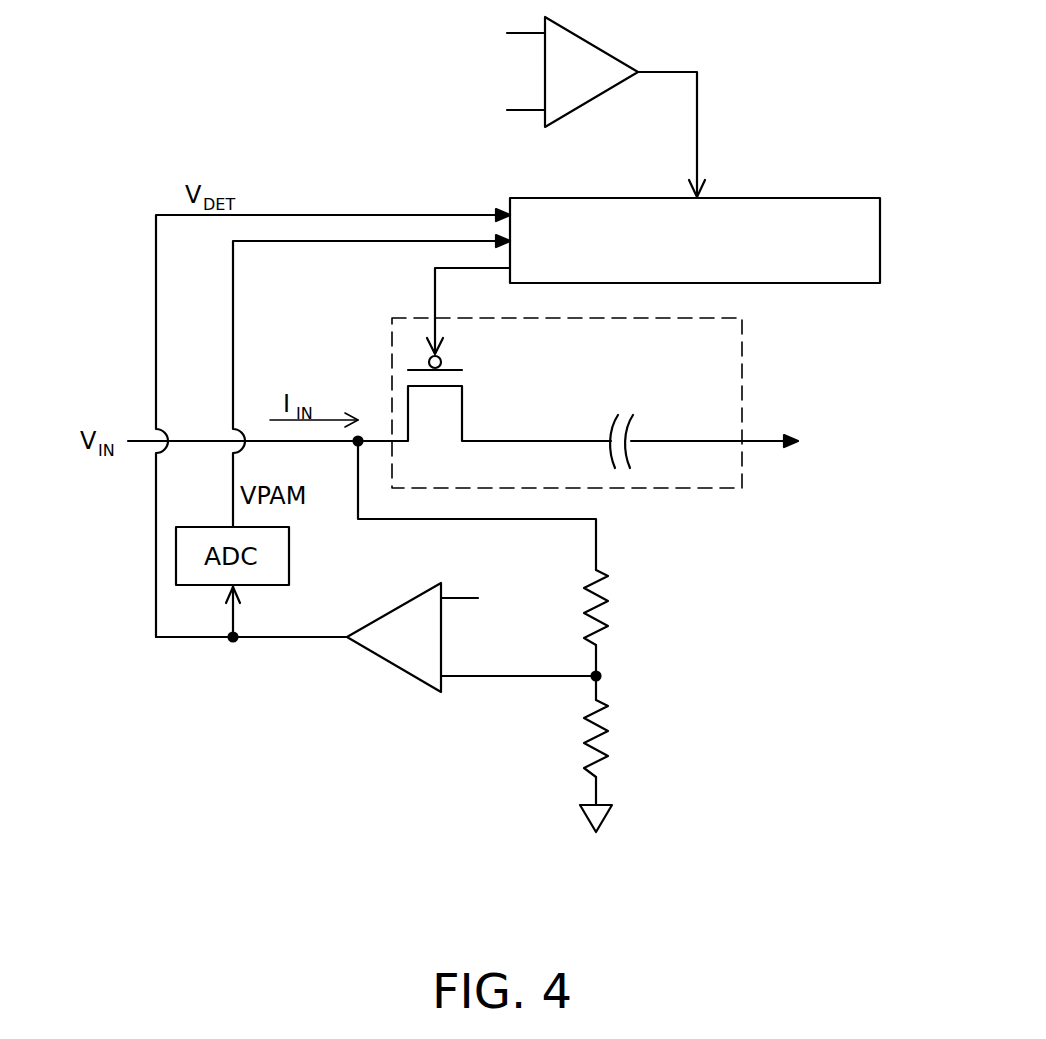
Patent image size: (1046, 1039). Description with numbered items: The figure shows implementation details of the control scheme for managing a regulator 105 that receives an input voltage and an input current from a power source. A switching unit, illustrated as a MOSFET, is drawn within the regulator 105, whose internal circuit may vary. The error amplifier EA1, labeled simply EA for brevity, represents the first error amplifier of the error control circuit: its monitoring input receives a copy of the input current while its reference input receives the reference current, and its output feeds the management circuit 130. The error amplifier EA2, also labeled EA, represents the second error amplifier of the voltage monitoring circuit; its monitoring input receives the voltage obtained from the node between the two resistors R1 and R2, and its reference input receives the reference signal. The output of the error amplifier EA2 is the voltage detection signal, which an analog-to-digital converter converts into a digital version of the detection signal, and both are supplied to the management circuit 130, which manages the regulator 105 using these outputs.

The management circuit 130 is at (848, 197).
The regulator 105 is at (742, 350).
The error amplifier EA1 is at (581, 37).
The error amplifier EA2 is at (387, 663).
The resistor R1 is at (616, 738).
The resistor R2 is at (616, 607).